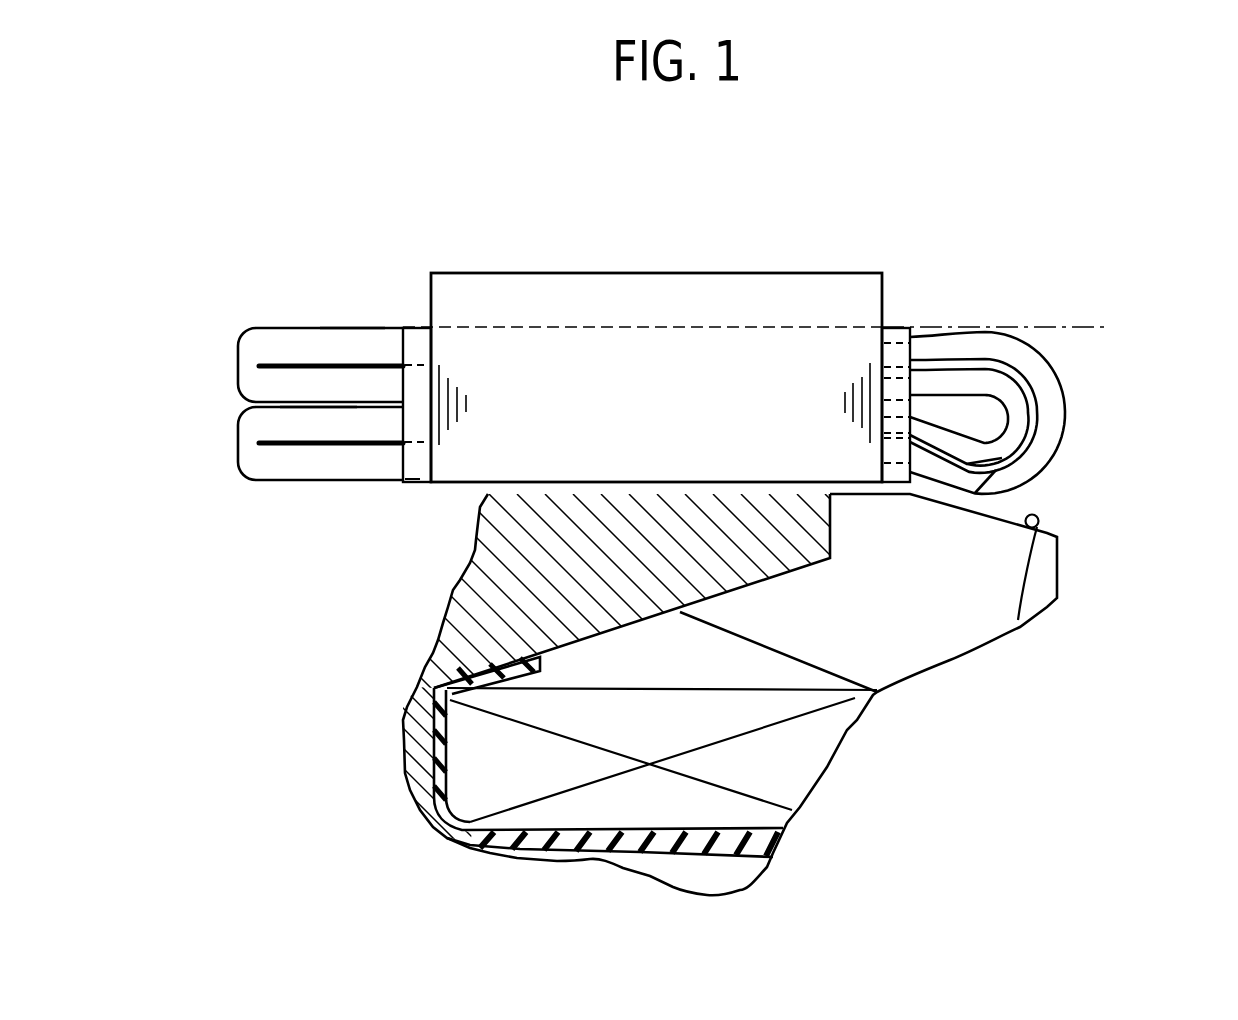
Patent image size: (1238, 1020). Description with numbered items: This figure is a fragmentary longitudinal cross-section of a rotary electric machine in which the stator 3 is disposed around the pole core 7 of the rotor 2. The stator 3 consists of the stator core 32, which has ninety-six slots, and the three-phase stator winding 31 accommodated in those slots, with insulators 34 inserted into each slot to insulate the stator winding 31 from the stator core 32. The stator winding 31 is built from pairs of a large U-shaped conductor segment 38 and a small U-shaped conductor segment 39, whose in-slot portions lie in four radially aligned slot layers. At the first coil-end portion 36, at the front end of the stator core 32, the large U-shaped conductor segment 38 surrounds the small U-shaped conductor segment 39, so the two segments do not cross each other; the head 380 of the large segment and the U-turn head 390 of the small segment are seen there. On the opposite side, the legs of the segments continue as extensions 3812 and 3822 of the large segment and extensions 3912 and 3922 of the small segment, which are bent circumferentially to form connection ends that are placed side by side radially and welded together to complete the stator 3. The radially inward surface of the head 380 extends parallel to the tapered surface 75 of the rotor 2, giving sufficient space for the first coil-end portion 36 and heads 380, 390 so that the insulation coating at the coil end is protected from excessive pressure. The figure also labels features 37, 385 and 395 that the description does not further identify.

The rotor 2 is at (1063, 602).
The stator 3 is at (754, 320).
The pole core 7 is at (897, 633).
The three-phase stator winding 31 is at (935, 333).
The stator core 32 is at (642, 290).
The insulators 34 is at (418, 347).
The first coil-end portion 36 is at (1070, 432).
The lead wires 37 is at (232, 380).
The large U-shaped conductor segment 38 is at (1070, 407).
The head 380 is at (1043, 392).
The outer spring end 385 is at (996, 470).
The small U-shaped conductor segment 39 is at (1005, 364).
The U-turn head 390 is at (978, 380).
The inner spring end 395 is at (1002, 458).
The tapered surface 75 is at (1018, 620).
The extension 3812 is at (343, 460).
The extension 3912 is at (357, 423).
The extension 3922 is at (372, 383).
The extension 3822 is at (385, 343).